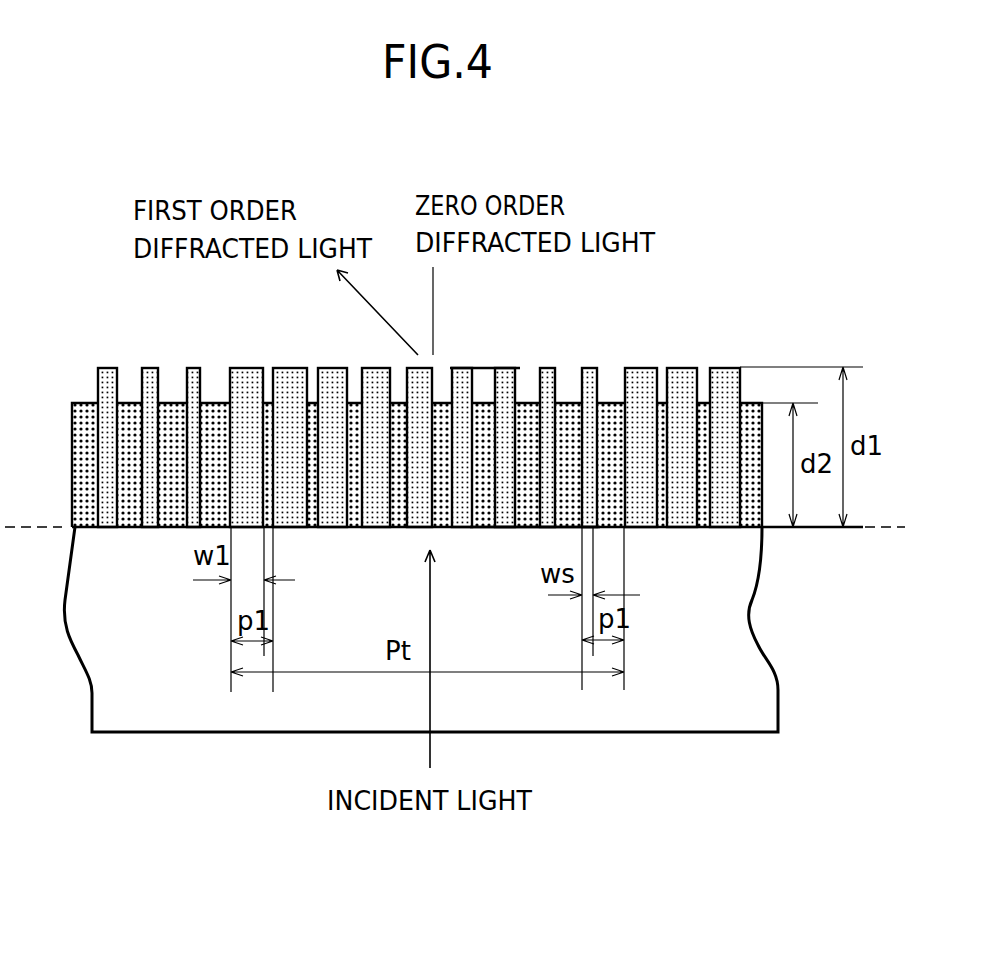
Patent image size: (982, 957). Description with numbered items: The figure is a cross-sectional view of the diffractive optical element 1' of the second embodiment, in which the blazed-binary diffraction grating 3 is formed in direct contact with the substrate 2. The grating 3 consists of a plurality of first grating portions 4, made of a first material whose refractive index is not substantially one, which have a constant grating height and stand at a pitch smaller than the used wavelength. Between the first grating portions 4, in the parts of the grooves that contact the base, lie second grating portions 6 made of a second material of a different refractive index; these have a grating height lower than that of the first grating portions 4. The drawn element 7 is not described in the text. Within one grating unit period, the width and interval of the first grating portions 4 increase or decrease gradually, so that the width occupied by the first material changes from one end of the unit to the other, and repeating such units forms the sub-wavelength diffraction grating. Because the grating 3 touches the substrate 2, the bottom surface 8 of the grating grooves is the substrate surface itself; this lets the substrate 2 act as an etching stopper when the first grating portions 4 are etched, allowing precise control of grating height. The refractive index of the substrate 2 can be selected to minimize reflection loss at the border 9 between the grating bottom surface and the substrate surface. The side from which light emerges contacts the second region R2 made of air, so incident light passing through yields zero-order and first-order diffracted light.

The diffractive optical element 1' is at (857, 288).
The substrate 2 is at (767, 716).
The blazed-binary diffraction grating 3 is at (60, 372).
The first grating portions 4 is at (242, 370).
The second grating portions 6 is at (130, 402).
The groove region 7 is at (168, 390).
The bottom surface 8 is at (530, 528).
The border 9 is at (42, 530).
The second region R2 is at (488, 358).